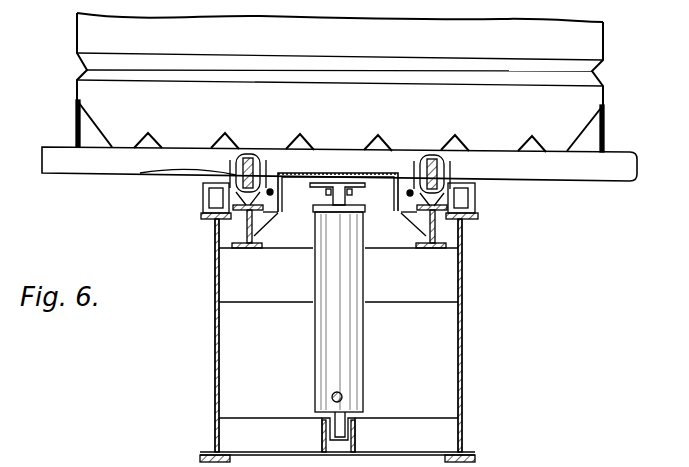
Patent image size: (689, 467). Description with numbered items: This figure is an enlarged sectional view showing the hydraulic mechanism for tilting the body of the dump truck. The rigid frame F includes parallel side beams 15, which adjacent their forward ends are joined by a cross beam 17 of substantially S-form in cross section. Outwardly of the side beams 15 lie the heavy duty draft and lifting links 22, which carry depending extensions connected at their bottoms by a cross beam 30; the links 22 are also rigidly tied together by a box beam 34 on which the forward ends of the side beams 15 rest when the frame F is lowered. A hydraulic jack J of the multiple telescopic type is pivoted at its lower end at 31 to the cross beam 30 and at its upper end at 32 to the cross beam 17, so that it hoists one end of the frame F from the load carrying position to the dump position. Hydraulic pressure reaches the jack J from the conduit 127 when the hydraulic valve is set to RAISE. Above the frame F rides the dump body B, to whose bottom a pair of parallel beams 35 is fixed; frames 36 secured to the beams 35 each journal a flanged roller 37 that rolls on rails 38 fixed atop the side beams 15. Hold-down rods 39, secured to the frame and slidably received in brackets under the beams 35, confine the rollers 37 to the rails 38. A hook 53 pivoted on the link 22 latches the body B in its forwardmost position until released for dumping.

The dump body B is at (608, 38).
The side beams 15 is at (231, 238).
The cross beam 17 is at (306, 173).
The links 22 is at (214, 372).
The cross beam 30 is at (433, 424).
The lower pivot of the jack 31 is at (322, 427).
The upper pivot of the jack 32 is at (346, 188).
The box beam 34 is at (414, 293).
The beams 35 is at (285, 150).
The frames 36 is at (237, 158).
The flanged roller 37 is at (249, 165).
The rails 38 is at (160, 177).
The rods 39 is at (272, 193).
The hook 53 is at (204, 200).
The conduit 127 is at (341, 393).
The point a is at (423, 361).
The frame F is at (212, 323).
The hydraulic jack J is at (330, 352).